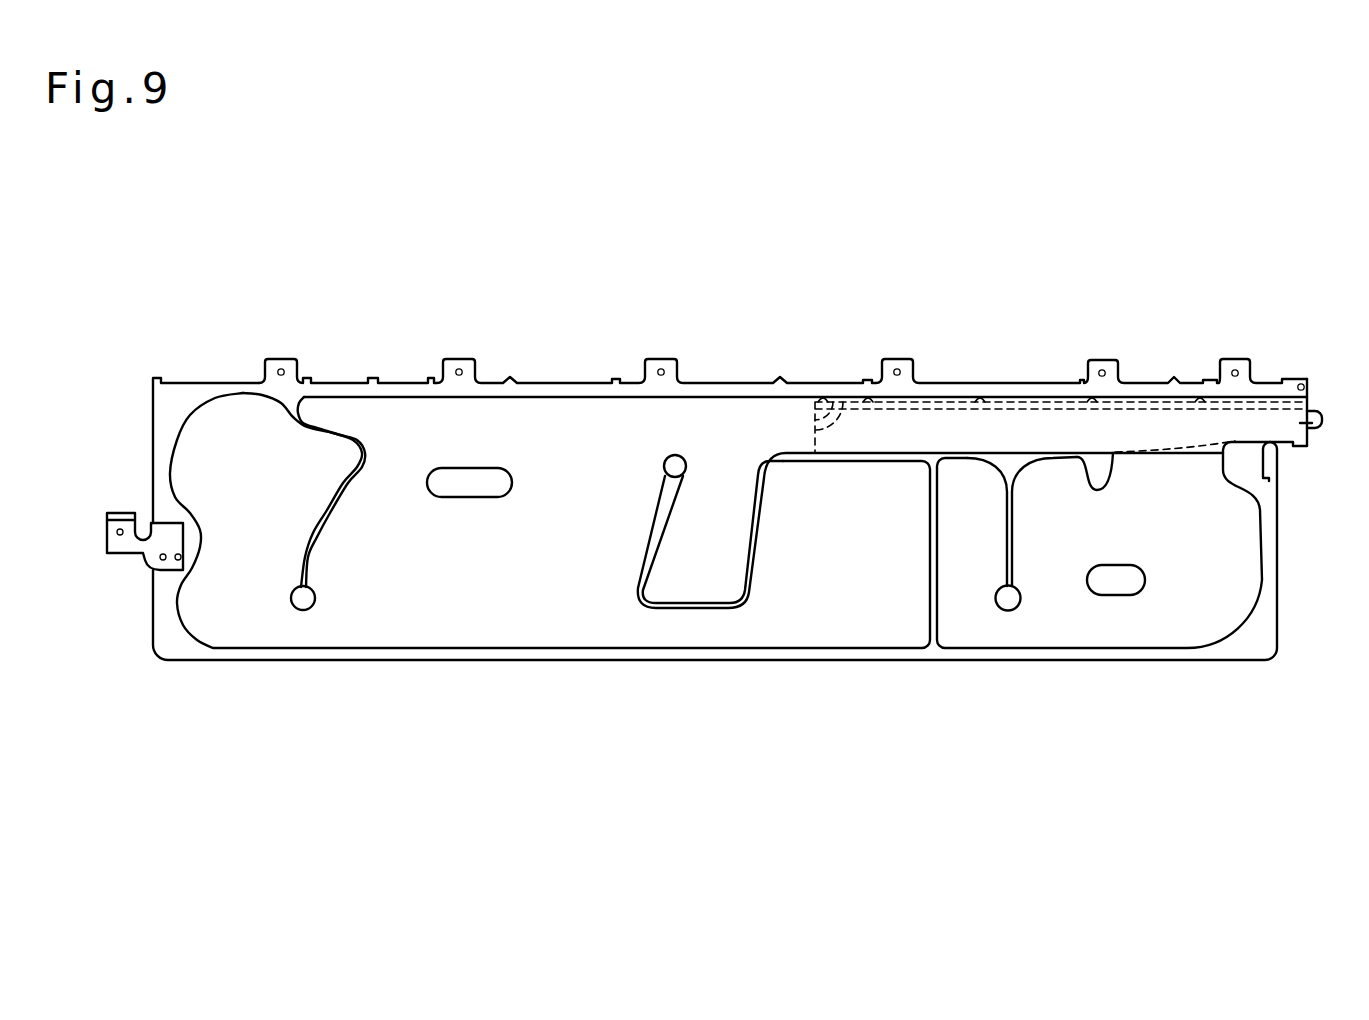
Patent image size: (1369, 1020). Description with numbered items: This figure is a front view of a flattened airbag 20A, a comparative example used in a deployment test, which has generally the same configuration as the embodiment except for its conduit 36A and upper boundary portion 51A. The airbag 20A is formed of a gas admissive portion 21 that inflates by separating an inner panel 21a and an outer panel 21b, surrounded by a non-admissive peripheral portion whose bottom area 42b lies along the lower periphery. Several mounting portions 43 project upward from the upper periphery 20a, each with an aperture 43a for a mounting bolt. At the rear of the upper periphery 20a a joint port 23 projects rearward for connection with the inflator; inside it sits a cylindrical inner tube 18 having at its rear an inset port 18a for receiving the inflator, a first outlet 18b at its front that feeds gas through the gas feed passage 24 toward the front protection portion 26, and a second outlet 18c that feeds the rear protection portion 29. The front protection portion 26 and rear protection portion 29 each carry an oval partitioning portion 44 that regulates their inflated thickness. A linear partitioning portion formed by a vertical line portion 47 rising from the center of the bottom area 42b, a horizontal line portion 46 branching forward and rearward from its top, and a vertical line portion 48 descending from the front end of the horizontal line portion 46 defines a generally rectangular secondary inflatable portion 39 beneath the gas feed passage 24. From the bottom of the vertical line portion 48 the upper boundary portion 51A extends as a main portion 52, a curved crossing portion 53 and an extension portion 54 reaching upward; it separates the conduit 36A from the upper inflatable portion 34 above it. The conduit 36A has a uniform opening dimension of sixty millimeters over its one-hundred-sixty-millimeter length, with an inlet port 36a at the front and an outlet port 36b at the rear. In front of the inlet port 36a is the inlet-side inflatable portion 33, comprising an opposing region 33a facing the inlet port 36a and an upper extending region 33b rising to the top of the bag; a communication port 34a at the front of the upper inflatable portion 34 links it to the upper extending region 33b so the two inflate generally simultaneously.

The airbag 20A is at (249, 285).
The upper periphery 20a is at (347, 388).
The bottom area 42b is at (503, 655).
The gas admissive portion 21 is at (269, 642).
The inner panel 21a is at (222, 622).
The outer panel 21b is at (197, 620).
The joint port 23 is at (1277, 420).
The gas feed passage 24 is at (927, 430).
The front protection portion 26 is at (450, 575).
The rear protection portion 29 is at (1202, 590).
The inlet-side inflatable portion 33 is at (567, 510).
The opposing region 33a is at (622, 622).
The upper extending region 33b is at (602, 430).
The upper inflatable portion 34 is at (727, 470).
The communication port 34a is at (677, 427).
The conduit 36A is at (693, 633).
The inlet port 36a is at (653, 627).
The outlet port 36b is at (718, 630).
The secondary inflatable portion 39 is at (872, 613).
The mounting portion 43 is at (1103, 369).
The aperture 43a is at (1099, 372).
The partitioning portion 44 is at (458, 483).
The horizontal line portion 46 is at (978, 456).
The vertical line portion 47 is at (938, 613).
The vertical line portion 48 is at (767, 513).
The upper boundary portion 51A is at (719, 575).
The main portion 52 is at (690, 605).
The curved crossing portion 53 is at (628, 600).
The extension portion 54 is at (653, 517).
The inner tube 18 is at (1137, 433).
The inset port 18a is at (1322, 427).
The first outlet 18b is at (853, 380).
The second outlet 18c is at (1178, 420).